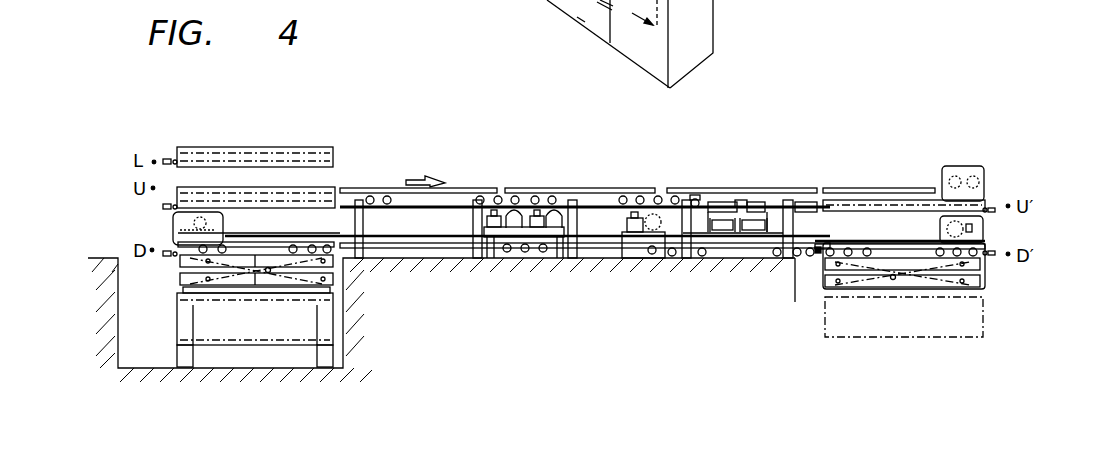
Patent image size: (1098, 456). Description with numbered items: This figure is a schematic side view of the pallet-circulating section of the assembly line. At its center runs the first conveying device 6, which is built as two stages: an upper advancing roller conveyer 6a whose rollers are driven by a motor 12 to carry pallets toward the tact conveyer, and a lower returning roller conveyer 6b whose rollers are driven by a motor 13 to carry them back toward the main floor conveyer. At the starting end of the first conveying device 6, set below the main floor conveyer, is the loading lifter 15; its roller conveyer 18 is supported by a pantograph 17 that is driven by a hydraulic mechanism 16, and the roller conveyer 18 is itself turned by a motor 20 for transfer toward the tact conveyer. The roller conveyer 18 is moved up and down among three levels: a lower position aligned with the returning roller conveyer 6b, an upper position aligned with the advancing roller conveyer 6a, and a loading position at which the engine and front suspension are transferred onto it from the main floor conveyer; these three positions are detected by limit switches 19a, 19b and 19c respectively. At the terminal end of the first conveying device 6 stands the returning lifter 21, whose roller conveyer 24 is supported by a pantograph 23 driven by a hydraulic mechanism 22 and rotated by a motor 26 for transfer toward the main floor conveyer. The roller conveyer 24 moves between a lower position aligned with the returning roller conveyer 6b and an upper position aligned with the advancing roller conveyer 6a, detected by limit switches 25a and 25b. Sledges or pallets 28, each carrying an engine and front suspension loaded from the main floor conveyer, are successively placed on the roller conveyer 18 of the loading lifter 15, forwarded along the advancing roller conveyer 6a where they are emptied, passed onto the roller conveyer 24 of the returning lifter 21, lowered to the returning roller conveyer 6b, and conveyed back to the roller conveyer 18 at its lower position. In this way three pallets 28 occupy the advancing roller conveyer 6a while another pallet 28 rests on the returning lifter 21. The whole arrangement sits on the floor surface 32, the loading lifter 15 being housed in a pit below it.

The first conveying device 6 is at (585, 166).
The advancing roller conveyer 6a is at (535, 200).
The returning roller conveyer 6b is at (525, 252).
The motor 12 is at (500, 250).
The motor 13 is at (548, 230).
The loading lifter 15 is at (206, 329).
The hydraulic mechanism 16 is at (248, 350).
The pantograph 17 is at (295, 268).
The roller conveyer 18 is at (285, 238).
The limit switch 19a is at (163, 256).
The limit switch 19b is at (163, 207).
The limit switch 19c is at (165, 160).
The motor 20 is at (176, 232).
The returning lifter 21 is at (897, 184).
The hydraulic mechanism 22 is at (920, 338).
The pantograph 23 is at (880, 283).
The roller conveyer 24 is at (818, 253).
The limit switch 25a is at (995, 255).
The limit switch 25b is at (995, 209).
The motor 26 is at (962, 166).
The pallet 28 is at (305, 147).
The floor surface 32 is at (118, 325).